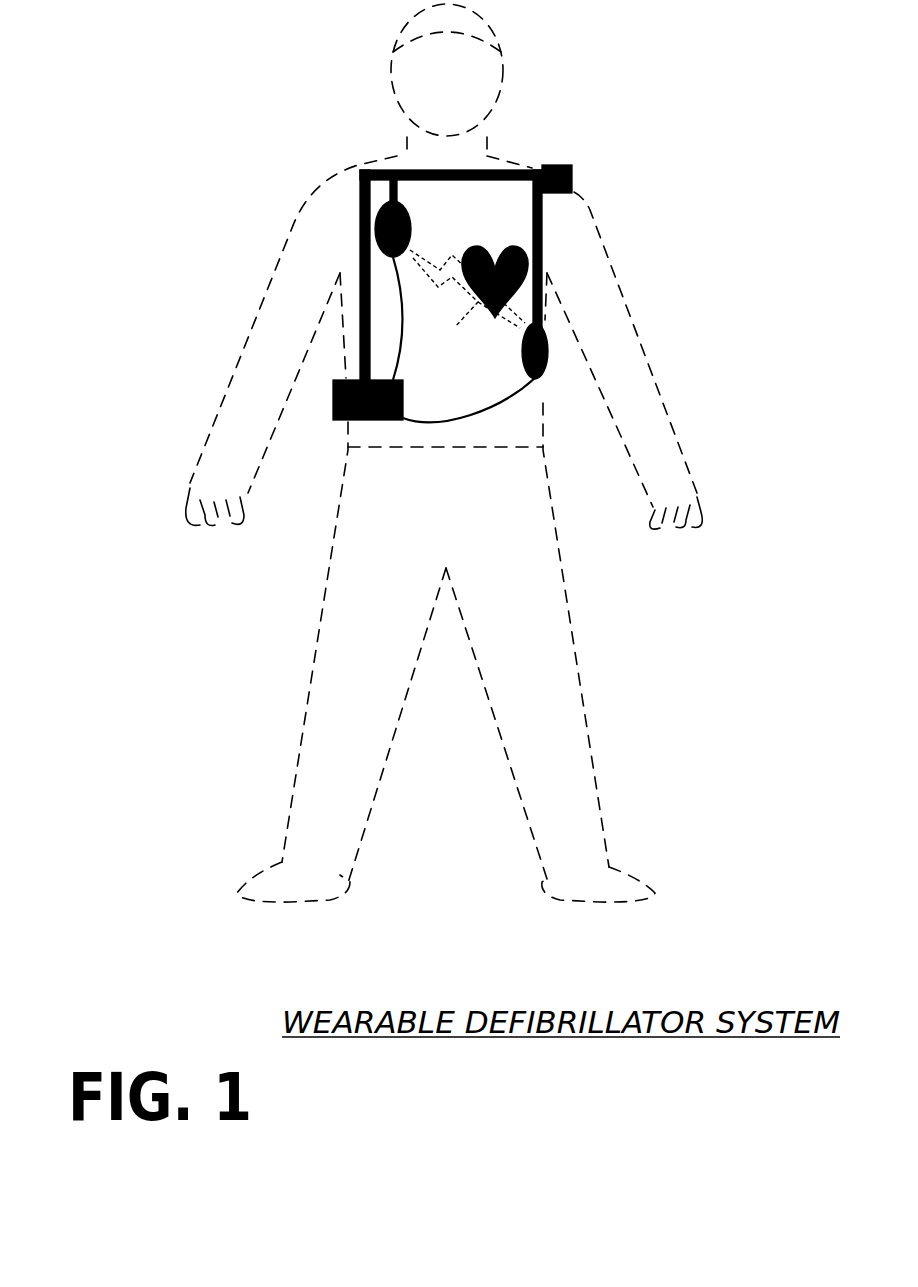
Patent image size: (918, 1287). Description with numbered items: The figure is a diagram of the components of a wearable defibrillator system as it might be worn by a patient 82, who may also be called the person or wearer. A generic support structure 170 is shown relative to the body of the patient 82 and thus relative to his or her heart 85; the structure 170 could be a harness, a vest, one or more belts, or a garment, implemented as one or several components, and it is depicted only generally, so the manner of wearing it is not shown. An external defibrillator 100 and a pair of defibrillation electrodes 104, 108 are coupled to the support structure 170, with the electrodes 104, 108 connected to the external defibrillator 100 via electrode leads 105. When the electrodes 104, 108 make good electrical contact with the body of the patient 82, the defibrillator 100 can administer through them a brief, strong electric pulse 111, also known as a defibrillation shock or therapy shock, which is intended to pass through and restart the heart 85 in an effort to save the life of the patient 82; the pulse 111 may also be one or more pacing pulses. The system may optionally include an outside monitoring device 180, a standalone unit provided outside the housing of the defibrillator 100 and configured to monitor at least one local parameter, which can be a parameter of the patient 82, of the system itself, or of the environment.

The patient 82 is at (383, 86).
The support structure 170 is at (360, 196).
The outside monitoring device 180 is at (574, 178).
The defibrillation electrode 104 is at (421, 236).
The heart 85 is at (502, 242).
The electric pulse 111 is at (467, 301).
The defibrillation electrode 108 is at (559, 366).
The electrode leads 105 is at (472, 412).
The external defibrillator 100 is at (333, 422).